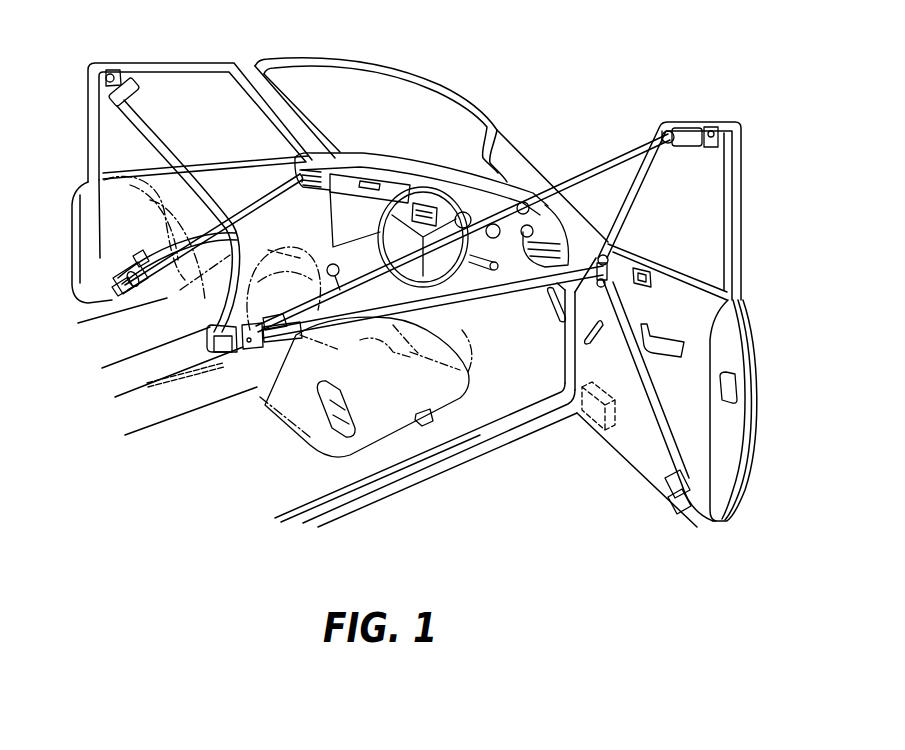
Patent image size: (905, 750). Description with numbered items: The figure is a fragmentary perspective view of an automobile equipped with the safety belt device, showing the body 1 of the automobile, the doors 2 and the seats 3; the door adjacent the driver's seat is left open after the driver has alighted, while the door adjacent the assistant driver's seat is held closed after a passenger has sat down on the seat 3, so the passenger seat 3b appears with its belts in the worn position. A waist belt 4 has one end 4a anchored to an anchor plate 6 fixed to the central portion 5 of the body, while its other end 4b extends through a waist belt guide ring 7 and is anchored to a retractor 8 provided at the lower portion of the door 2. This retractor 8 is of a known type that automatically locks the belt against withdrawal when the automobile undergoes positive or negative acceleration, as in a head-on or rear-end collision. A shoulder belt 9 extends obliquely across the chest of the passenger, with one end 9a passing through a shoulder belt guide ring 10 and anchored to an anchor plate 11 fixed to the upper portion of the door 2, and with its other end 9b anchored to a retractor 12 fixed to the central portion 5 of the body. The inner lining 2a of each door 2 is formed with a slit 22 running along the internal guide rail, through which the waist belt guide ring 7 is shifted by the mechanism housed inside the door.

The body of an automobile 1 is at (443, 432).
The door 2 is at (107, 143).
The inner lining 2a is at (223, 177).
The seat 3 is at (290, 250).
The passenger seat 3b is at (193, 290).
The waist belt 4 is at (200, 237).
The end of waist belt 4a is at (280, 340).
The other end of waist belt 4b is at (668, 474).
The central portion of the automobile body 5 is at (192, 363).
The anchor plate 6 is at (250, 347).
The waist belt guide ring 7 is at (140, 253).
The retractor 8 is at (110, 288).
The shoulder belt 9 is at (173, 163).
The end of shoulder belt 9a is at (133, 83).
The other end of shoulder belt 9b is at (200, 333).
The shoulder belt guide ring 10 is at (133, 87).
The anchor plate 11 is at (100, 88).
The retractor 12 is at (213, 360).
The slit 22 is at (277, 182).